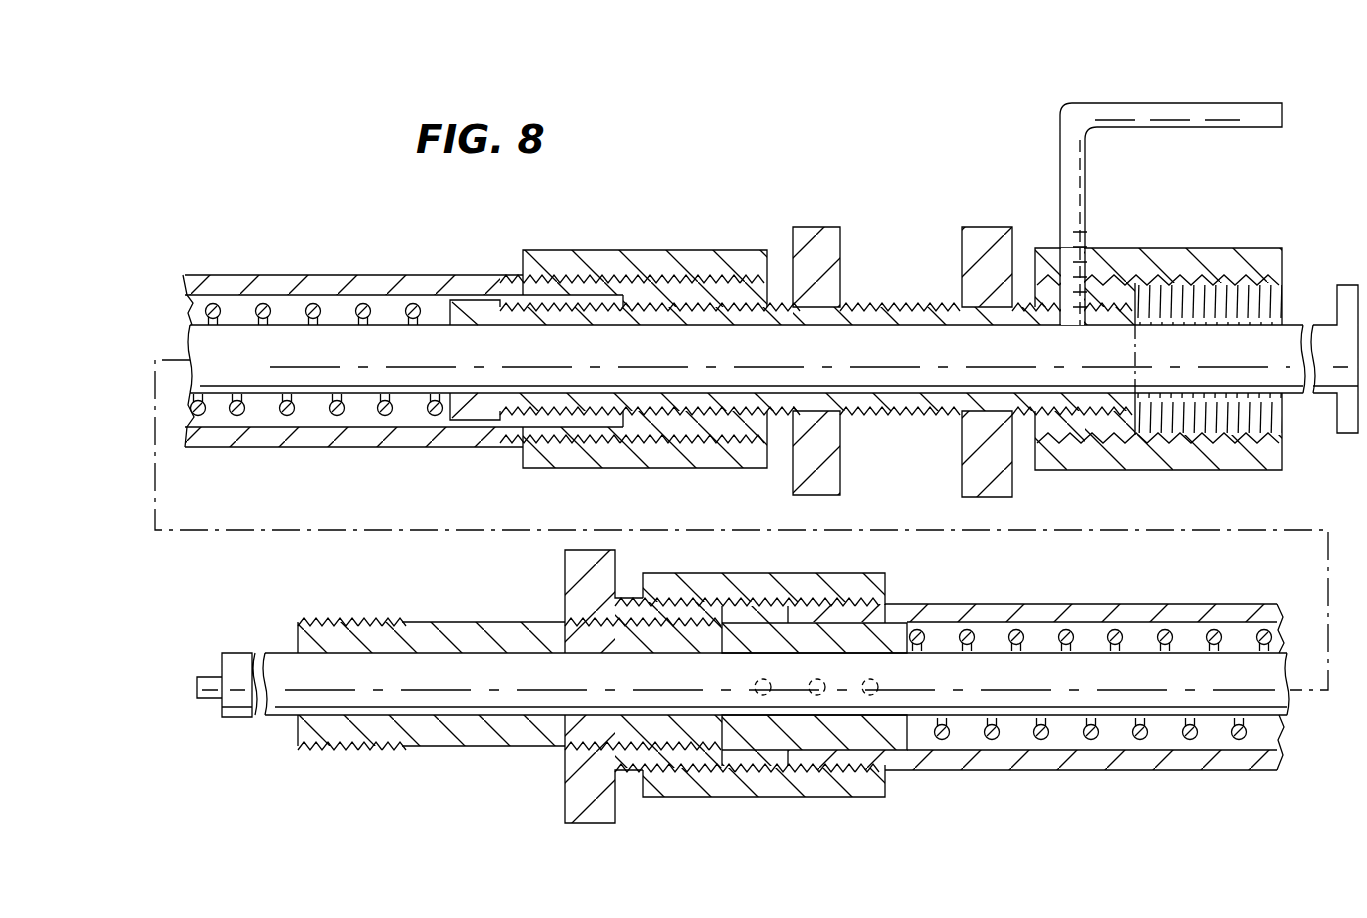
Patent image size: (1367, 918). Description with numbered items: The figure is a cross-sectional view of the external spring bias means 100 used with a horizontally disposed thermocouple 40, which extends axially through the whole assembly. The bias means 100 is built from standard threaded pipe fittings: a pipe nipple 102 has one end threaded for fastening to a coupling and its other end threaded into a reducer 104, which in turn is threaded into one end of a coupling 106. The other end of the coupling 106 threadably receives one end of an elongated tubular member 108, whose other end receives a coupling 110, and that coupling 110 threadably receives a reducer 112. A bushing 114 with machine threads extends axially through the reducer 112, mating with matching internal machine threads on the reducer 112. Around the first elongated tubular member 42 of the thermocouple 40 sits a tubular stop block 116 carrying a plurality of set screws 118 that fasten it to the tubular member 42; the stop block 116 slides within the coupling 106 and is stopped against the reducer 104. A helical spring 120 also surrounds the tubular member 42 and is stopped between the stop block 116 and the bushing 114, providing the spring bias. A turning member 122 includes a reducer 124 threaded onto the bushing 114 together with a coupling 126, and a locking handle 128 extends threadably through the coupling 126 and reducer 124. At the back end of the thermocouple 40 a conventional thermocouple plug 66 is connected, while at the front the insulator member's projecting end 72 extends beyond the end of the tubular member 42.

The external spring bias means 100 is at (412, 207).
The thermocouple 40 is at (1240, 362).
The first elongated tubular member 42 is at (894, 653).
The thermocouple plug 66 is at (1337, 300).
The projecting end 72 is at (212, 684).
The pipe nipple 102 is at (432, 742).
The reducer 104 is at (570, 823).
The coupling 106 is at (727, 798).
The elongated tubular member 108 is at (290, 276).
The coupling 110 is at (712, 250).
The reducer 112 is at (845, 193).
The bushing 114 is at (905, 304).
The stop block 116 is at (906, 772).
The set screws 118 is at (756, 683).
The helical spring 120 is at (395, 405).
The turning member 122 is at (1238, 242).
The reducer 124 is at (993, 227).
The coupling 126 is at (1143, 248).
The locking handle 128 is at (1247, 119).